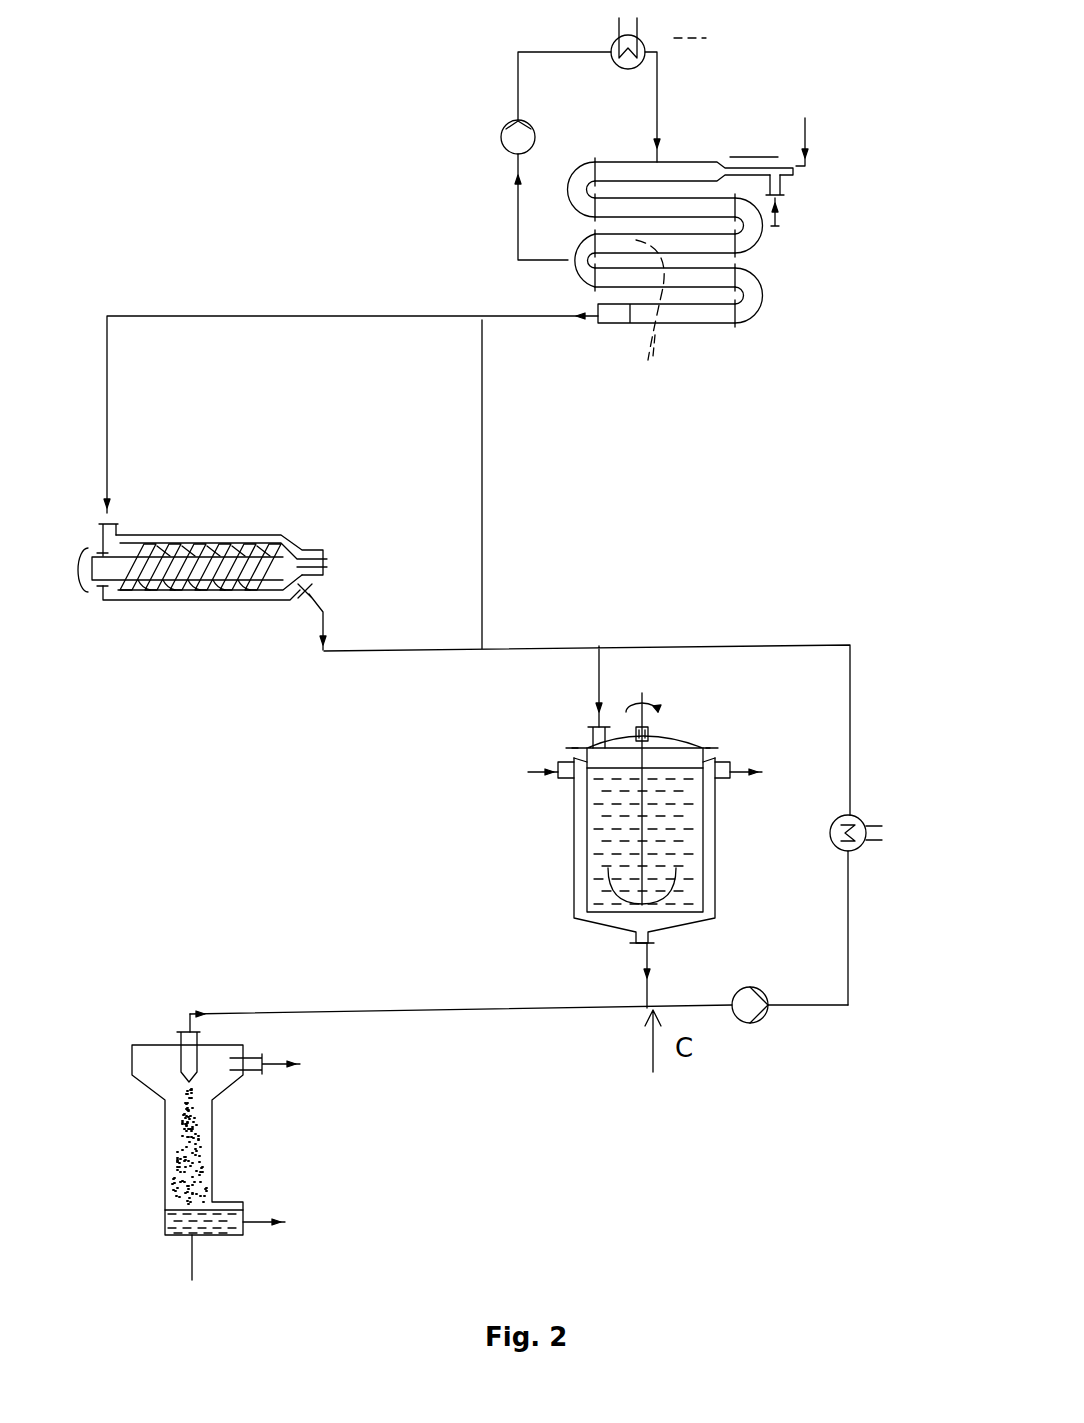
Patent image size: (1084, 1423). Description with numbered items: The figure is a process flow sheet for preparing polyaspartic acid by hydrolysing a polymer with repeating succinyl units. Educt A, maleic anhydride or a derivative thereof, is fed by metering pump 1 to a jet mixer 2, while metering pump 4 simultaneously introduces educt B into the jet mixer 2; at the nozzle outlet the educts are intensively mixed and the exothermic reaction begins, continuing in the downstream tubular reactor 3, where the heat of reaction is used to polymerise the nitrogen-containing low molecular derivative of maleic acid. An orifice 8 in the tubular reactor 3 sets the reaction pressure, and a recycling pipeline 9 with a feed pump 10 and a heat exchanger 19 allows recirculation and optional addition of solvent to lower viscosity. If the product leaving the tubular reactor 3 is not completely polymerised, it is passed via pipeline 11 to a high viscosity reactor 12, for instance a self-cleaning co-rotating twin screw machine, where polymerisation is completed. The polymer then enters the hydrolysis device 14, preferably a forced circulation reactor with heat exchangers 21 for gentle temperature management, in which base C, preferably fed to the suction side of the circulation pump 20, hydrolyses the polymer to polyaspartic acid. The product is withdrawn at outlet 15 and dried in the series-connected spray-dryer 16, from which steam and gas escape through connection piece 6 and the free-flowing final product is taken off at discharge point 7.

The metering pump 1 is at (809, 123).
The jet mixer 2 is at (717, 157).
The tubular reactor 3 is at (768, 302).
The metering pump 4 is at (790, 207).
The connection piece 6 is at (284, 1069).
The discharge point 7 is at (286, 1223).
The orifice 8 is at (650, 319).
The recycling pipeline 9 is at (587, 100).
The feed pump 10 is at (500, 140).
The pipeline 11 is at (351, 402).
The high viscosity reactor 12 is at (236, 530).
The hydrolysis device 14 is at (718, 835).
The outlet 15 is at (674, 975).
The spray-dryer 16 is at (187, 1169).
The heat exchanger 19 is at (691, 21).
The circulation pump 20 is at (519, 1029).
The heat exchangers 21 is at (870, 889).